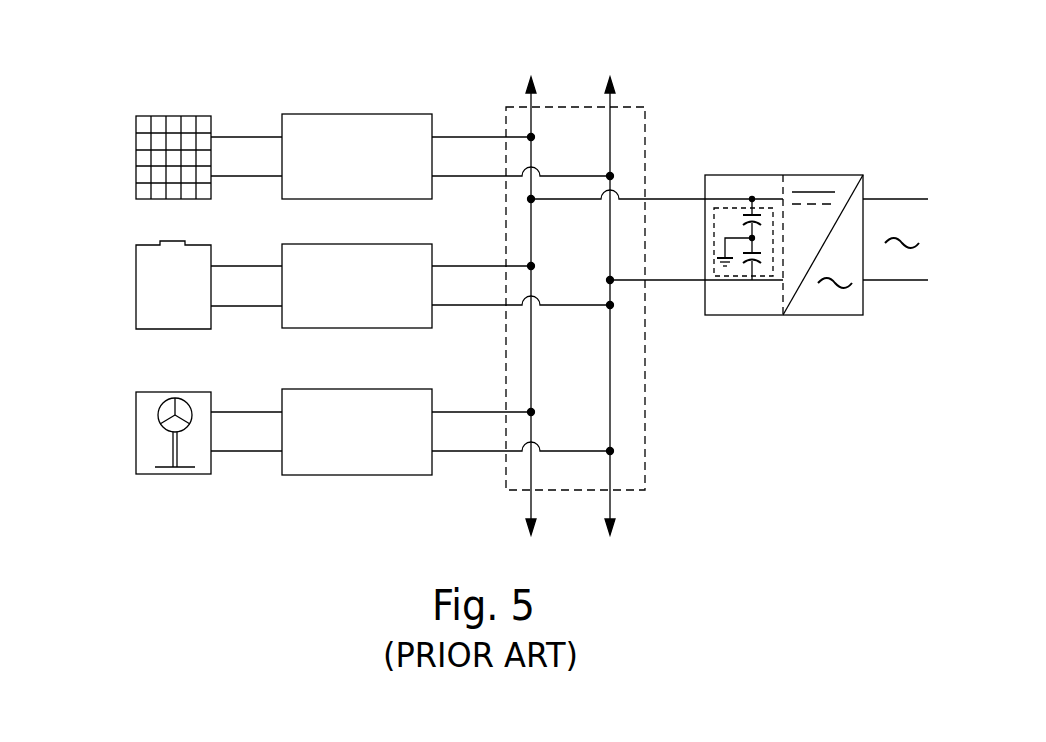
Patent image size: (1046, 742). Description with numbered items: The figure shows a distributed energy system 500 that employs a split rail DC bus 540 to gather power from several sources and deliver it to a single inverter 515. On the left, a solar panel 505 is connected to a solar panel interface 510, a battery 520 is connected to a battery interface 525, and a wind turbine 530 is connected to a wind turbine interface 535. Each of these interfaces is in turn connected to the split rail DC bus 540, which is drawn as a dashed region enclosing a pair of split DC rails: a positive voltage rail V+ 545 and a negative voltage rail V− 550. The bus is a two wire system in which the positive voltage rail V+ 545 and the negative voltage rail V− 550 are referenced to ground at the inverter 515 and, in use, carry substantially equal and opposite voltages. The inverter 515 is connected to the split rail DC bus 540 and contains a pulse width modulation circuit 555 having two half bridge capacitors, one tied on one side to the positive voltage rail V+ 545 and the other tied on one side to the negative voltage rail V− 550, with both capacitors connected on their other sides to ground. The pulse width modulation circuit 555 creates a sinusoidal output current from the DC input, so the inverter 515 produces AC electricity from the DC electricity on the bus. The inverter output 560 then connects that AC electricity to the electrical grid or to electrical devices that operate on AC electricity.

The distributed energy system 500 is at (150, 45).
The solar panel 505 is at (136, 145).
The solar panel interface 510 is at (330, 114).
The inverter 515 is at (763, 175).
The battery 520 is at (136, 277).
The battery interface 525 is at (423, 244).
The wind turbine 530 is at (136, 419).
The wind turbine interface 535 is at (422, 389).
The split rail DC bus 540 is at (639, 107).
The positive voltage rail V+ 545 is at (530, 118).
The negative voltage rail V− 550 is at (612, 137).
The pulse width modulation circuit 555 is at (732, 277).
The inverter output 560 is at (910, 199).